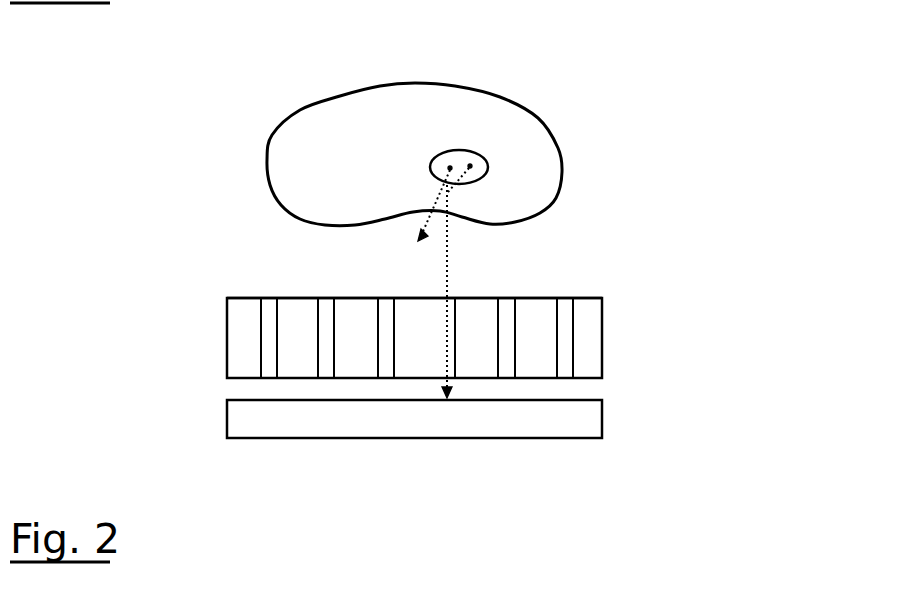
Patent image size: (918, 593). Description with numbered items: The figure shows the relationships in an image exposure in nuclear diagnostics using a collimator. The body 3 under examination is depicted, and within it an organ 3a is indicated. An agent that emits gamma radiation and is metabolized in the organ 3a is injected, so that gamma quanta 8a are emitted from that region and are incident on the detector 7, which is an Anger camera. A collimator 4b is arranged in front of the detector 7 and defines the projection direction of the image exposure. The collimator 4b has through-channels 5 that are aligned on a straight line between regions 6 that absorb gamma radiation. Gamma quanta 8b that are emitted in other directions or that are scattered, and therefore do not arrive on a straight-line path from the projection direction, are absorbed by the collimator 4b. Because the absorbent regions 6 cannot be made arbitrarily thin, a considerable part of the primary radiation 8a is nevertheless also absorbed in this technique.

The body 3 is at (517, 125).
The organ 3a is at (488, 167).
The collimator 4b is at (442, 281).
The through-channels 5 is at (322, 297).
The regions that absorb gamma radiation 6 is at (298, 337).
The detector 7 is at (602, 418).
The gamma quanta (primary radiation) 8a is at (448, 263).
The gamma quanta (scattered or off-direction) 8b is at (423, 213).